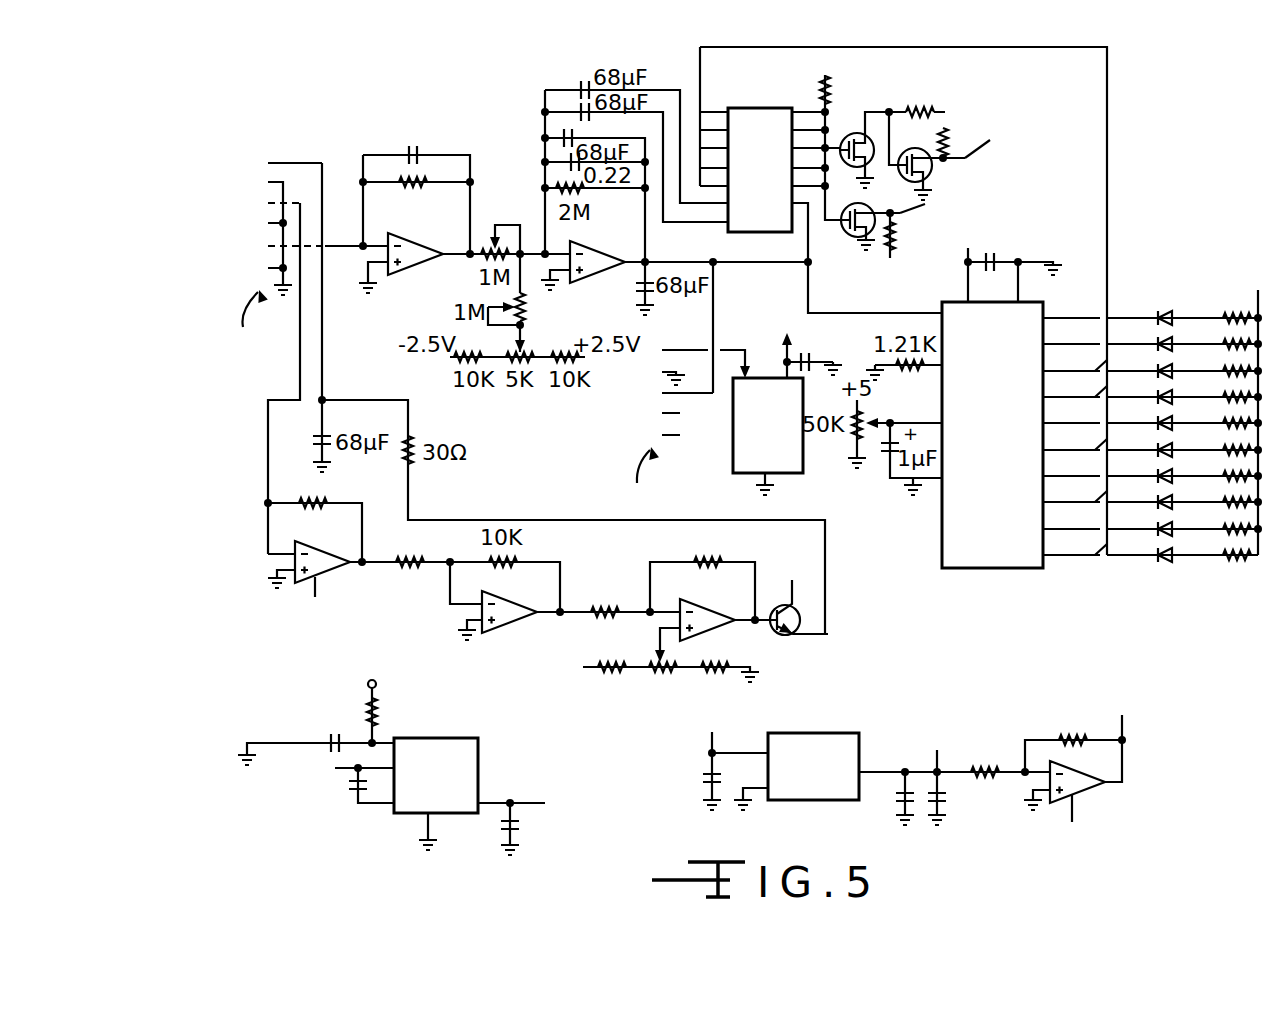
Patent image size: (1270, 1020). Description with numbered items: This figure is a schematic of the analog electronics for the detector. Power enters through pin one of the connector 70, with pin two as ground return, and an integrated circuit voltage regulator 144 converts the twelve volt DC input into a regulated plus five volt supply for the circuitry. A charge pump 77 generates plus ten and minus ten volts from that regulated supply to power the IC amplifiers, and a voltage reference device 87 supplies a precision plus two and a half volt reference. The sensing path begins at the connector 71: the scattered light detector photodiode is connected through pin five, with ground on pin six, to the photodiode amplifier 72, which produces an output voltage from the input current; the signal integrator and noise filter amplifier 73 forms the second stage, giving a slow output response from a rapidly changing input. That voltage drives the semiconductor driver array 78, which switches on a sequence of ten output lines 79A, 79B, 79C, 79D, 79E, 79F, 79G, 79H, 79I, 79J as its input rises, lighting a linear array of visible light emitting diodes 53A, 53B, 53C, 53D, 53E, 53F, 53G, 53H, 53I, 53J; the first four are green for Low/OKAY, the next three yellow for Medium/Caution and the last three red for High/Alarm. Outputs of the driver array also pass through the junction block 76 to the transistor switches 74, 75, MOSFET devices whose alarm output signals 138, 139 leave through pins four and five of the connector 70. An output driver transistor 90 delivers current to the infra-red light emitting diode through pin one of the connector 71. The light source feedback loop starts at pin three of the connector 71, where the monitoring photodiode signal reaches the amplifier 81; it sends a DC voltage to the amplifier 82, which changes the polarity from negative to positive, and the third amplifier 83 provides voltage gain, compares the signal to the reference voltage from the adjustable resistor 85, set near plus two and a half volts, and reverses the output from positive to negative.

The connector 70 is at (668, 348).
The connector 71 is at (244, 212).
The photodiode amplifier 72 is at (440, 268).
The signal integrator and noise filter amplifier 73 is at (612, 270).
The transistor switch 74 is at (918, 148).
The transistor switch 75 is at (850, 240).
The junction block 76 is at (770, 180).
The charge pump 77 is at (446, 789).
The semiconductor driver array 78 is at (1000, 441).
The output line 79A is at (1071, 306).
The output line 79B is at (1071, 332).
The output line 79C is at (1075, 359).
The output line 79D is at (1075, 385).
The output line 79E is at (1071, 411).
The output line 79F is at (1075, 438).
The output line 79G is at (1071, 464).
The output line 79H is at (1075, 490).
The output line 79I is at (1071, 517).
The output line 79J is at (1075, 543).
The light emitting diode 53A is at (1184, 310).
The light emitting diode 53B is at (1184, 336).
The light emitting diode 53C is at (1184, 363).
The light emitting diode 53D is at (1184, 389).
The light emitting diode 53E is at (1184, 415).
The light emitting diode 53F is at (1184, 442).
The light emitting diode 53G is at (1184, 468).
The light emitting diode 53H is at (1184, 494).
The light emitting diode 53I is at (1184, 521).
The light emitting diode 53J is at (1182, 547).
The amplifier 81 is at (318, 578).
The amplifier 82 is at (520, 624).
The third amplifier 83 is at (718, 633).
The adjustable resistor 85 is at (655, 672).
The voltage reference device 87 is at (822, 778).
The output driver transistor 90 is at (778, 604).
The alarm output signal 138 is at (1003, 143).
The alarm output signal 139 is at (939, 203).
The voltage regulator 144 is at (786, 430).